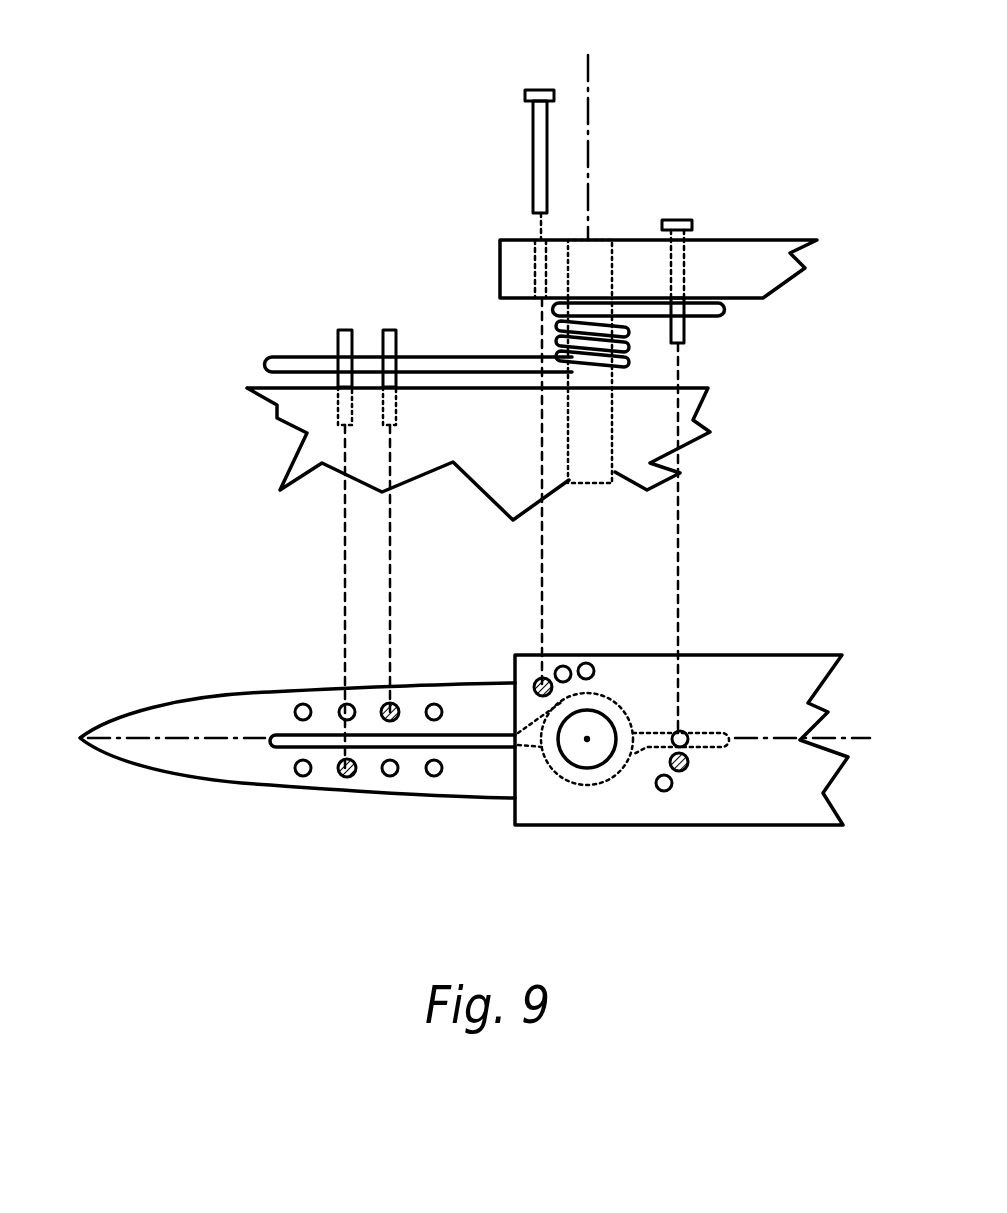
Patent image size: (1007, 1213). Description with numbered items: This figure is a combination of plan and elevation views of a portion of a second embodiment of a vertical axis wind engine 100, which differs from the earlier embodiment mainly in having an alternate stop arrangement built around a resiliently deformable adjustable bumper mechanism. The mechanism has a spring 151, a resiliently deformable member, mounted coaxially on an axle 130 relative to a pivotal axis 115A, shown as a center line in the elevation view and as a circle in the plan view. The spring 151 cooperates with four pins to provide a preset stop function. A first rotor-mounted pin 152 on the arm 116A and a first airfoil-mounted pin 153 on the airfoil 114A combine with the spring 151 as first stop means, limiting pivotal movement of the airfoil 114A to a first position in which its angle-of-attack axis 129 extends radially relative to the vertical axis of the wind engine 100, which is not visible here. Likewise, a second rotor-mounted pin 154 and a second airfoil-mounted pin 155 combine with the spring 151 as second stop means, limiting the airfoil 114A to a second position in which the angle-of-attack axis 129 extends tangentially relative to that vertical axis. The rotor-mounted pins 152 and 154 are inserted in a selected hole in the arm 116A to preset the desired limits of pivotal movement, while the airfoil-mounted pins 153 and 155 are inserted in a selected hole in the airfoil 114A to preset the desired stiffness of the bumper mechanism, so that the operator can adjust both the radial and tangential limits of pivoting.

The wind engine 100 is at (258, 43).
The airfoil 114A is at (303, 420).
The pivotal axis 115A is at (590, 72).
The arm 116A is at (515, 242).
The angle-of-attack axis 129 is at (110, 743).
The axle 130 is at (592, 485).
The spring 151 is at (265, 358).
The first rotor-mounted pin 152 is at (692, 223).
The first airfoil-mounted pin 153 is at (342, 330).
The second rotor-mounted pin 154 is at (523, 92).
The second airfoil-mounted pin 155 is at (392, 330).